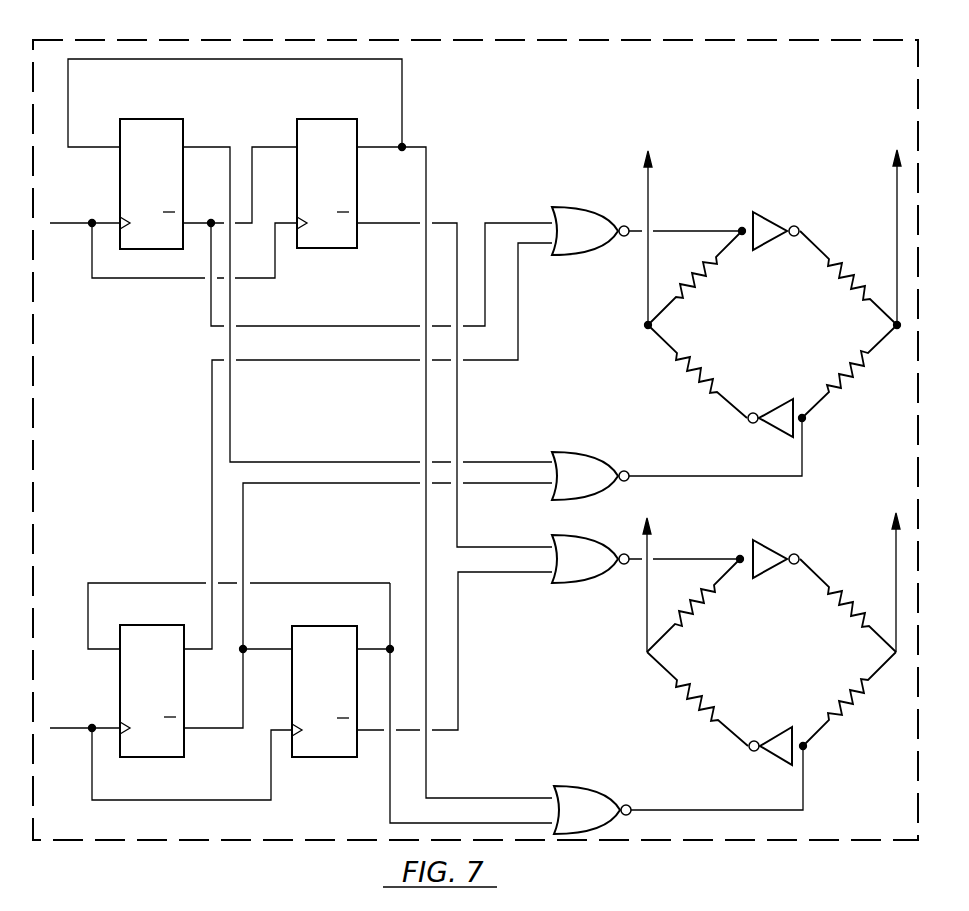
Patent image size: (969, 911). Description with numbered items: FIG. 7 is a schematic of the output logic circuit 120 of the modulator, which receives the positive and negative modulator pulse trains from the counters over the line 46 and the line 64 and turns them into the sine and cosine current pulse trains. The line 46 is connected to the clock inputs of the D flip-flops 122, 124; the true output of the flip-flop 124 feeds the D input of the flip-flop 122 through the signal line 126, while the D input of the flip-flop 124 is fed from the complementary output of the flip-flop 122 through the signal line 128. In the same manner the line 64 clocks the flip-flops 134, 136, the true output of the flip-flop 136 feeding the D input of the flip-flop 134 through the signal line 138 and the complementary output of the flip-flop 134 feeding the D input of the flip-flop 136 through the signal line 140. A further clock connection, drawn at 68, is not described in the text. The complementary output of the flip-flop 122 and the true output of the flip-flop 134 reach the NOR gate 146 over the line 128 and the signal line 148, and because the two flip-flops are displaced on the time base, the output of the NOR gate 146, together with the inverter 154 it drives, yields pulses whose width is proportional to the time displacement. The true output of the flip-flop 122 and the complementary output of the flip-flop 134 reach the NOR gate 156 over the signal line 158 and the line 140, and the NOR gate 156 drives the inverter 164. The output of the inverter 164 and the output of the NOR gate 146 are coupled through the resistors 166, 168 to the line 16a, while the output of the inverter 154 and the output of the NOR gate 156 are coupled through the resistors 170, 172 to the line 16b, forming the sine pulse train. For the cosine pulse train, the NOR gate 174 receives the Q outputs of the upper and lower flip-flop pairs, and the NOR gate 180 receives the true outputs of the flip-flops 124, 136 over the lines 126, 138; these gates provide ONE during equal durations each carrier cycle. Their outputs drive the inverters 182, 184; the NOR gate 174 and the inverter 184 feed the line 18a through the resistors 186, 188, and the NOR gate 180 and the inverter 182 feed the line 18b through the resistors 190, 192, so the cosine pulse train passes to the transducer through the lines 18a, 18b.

The output logic circuit 120 is at (556, 40).
The D flip-flop 122 is at (155, 119).
The D flip-flop 124 is at (330, 119).
The signal line 126 is at (295, 60).
The signal line 128 is at (270, 147).
The line 46 is at (86, 220).
The signal line 158 is at (325, 462).
The signal line 148 is at (410, 360).
The signal line 140 is at (335, 483).
The signal line 138 is at (268, 583).
The flip-flop 134 is at (165, 625).
The flip-flop 136 is at (325, 626).
The line 64 is at (80, 728).
The clock signal line 68 is at (270, 775).
The NOR gate 146 is at (585, 207).
The NOR gate 156 is at (572, 452).
The NOR gate 174 is at (598, 583).
The NOR gate 180 is at (600, 786).
The line 16a is at (648, 187).
The line 16b is at (897, 187).
The inverter 154 is at (752, 212).
The inverter 164 is at (778, 400).
The resistor 166 is at (690, 365).
The resistor 168 is at (700, 285).
The resistor 170 is at (838, 290).
The resistor 172 is at (860, 356).
The line 18a is at (647, 548).
The line 18b is at (896, 548).
The inverter 182 is at (770, 540).
The inverter 184 is at (775, 767).
The resistor 186 is at (690, 615).
The resistor 188 is at (700, 690).
The resistor 190 is at (850, 690).
The resistor 192 is at (838, 615).